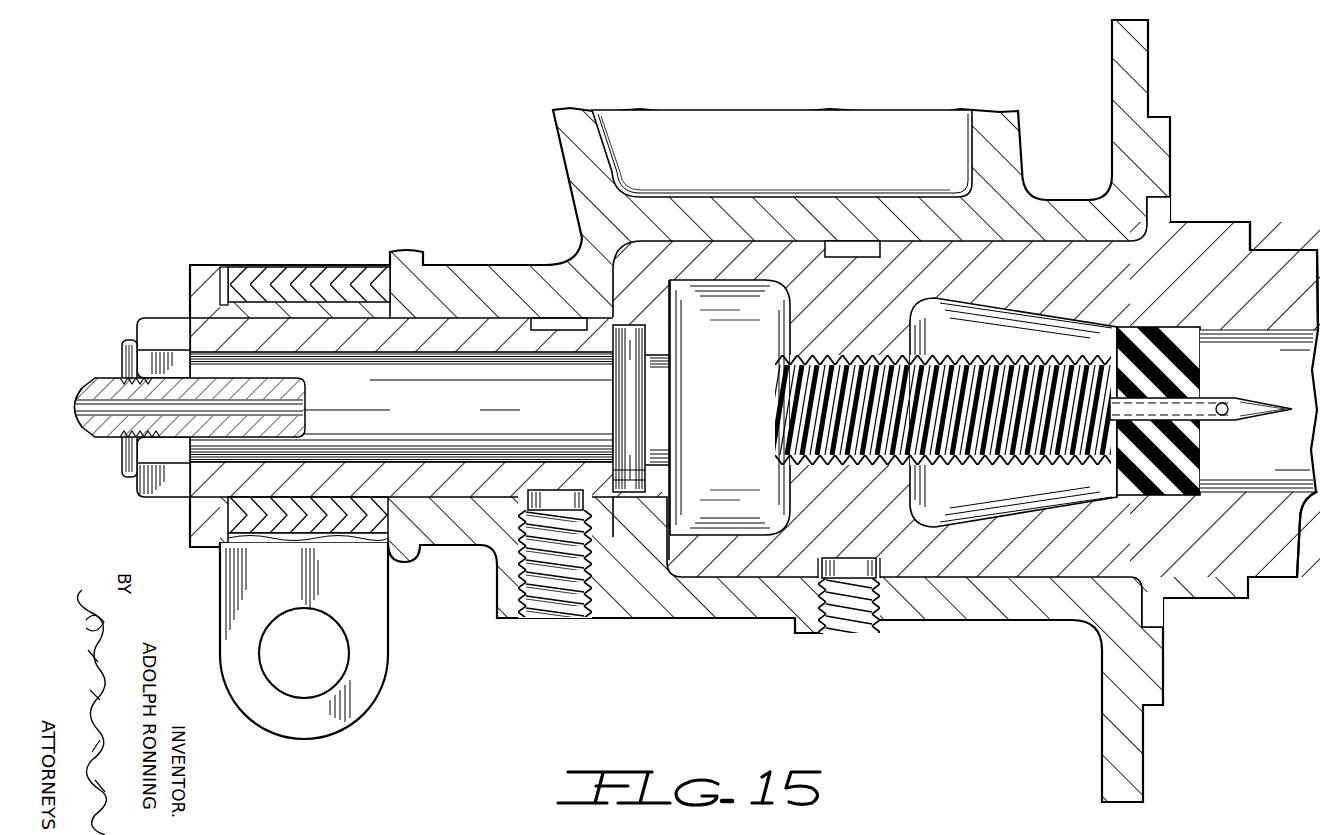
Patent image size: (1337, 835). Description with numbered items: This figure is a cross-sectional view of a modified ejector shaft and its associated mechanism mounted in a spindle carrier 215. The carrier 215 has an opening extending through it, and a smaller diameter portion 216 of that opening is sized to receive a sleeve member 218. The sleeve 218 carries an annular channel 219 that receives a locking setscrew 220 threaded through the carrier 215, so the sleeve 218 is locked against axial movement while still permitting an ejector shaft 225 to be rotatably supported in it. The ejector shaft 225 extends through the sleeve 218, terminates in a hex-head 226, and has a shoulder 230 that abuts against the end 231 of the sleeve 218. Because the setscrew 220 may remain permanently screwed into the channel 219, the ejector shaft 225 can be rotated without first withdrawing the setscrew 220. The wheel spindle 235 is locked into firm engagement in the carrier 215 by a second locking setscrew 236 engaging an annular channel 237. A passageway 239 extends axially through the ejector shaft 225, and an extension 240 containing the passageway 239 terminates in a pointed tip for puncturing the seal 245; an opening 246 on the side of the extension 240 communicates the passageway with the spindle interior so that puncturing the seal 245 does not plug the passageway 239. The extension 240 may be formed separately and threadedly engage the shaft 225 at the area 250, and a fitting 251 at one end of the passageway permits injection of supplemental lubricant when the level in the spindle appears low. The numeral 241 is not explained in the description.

The spindle carrier 215 is at (1163, 157).
The wheel spindle 235 is at (1228, 228).
The hex-head 226 is at (167, 320).
The fitting 251 is at (78, 388).
The area 250 is at (125, 378).
The passageway 239 is at (1207, 407).
The sleeve member 218 is at (347, 347).
The smaller diameter portion 216 is at (450, 318).
The annular channel 219 is at (527, 320).
The ejector shaft 225 is at (468, 417).
The end 231 is at (627, 313).
The shoulder 230 is at (620, 483).
The locking setscrew 220 is at (552, 620).
The annular channel 237 is at (820, 567).
The locking setscrew 236 is at (855, 636).
The seal 245 is at (1113, 477).
The opening 246 is at (1233, 402).
The pivot 241 is at (1267, 420).
The extension 240 is at (1220, 427).